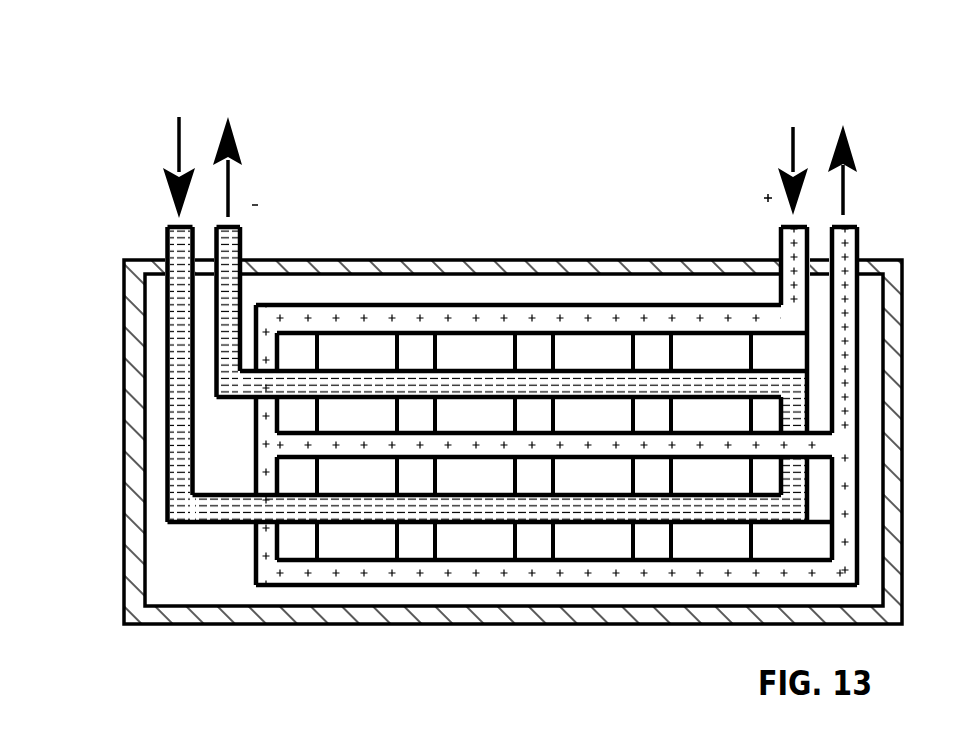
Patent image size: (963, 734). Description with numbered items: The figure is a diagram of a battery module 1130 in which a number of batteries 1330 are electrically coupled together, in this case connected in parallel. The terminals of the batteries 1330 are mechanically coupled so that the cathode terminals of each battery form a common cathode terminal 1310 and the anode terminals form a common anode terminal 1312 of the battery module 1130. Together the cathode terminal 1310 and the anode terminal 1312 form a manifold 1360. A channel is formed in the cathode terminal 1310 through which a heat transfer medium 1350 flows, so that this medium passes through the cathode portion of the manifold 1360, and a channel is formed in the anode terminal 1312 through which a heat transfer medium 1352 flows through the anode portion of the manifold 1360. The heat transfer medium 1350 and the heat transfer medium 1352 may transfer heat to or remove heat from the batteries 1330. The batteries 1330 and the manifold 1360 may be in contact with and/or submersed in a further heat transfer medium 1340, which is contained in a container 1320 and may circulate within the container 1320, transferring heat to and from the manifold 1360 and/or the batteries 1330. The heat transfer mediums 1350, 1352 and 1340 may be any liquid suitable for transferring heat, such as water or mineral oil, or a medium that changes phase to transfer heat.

The battery module 1130 is at (127, 56).
The cathode terminal 1310 is at (780, 237).
The anode terminal 1312 is at (166, 238).
The container 1320 is at (123, 480).
The batteries 1330 is at (738, 550).
The heat transfer medium 1340 is at (210, 573).
The heat transfer medium 1350 is at (791, 143).
The heat transfer medium 1352 is at (176, 140).
The manifold 1360 is at (566, 284).